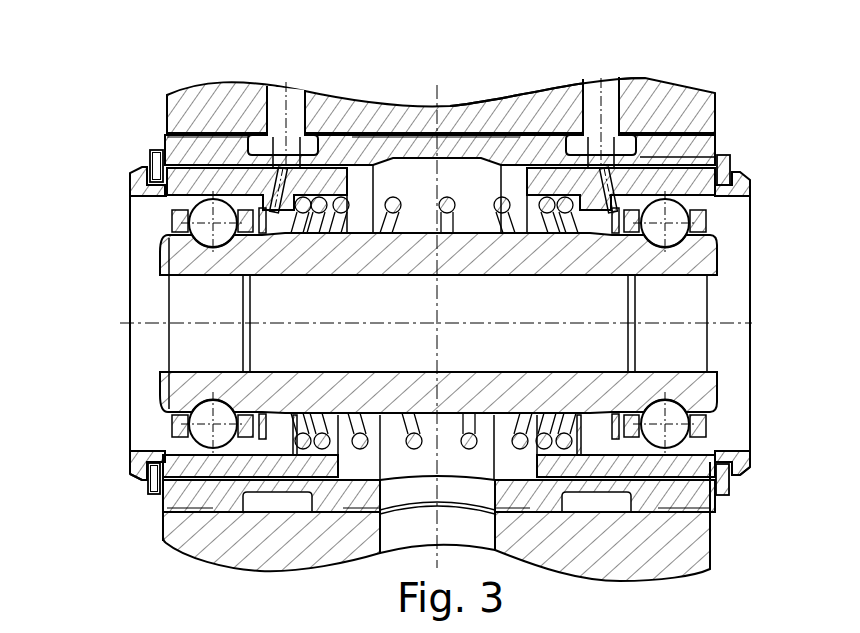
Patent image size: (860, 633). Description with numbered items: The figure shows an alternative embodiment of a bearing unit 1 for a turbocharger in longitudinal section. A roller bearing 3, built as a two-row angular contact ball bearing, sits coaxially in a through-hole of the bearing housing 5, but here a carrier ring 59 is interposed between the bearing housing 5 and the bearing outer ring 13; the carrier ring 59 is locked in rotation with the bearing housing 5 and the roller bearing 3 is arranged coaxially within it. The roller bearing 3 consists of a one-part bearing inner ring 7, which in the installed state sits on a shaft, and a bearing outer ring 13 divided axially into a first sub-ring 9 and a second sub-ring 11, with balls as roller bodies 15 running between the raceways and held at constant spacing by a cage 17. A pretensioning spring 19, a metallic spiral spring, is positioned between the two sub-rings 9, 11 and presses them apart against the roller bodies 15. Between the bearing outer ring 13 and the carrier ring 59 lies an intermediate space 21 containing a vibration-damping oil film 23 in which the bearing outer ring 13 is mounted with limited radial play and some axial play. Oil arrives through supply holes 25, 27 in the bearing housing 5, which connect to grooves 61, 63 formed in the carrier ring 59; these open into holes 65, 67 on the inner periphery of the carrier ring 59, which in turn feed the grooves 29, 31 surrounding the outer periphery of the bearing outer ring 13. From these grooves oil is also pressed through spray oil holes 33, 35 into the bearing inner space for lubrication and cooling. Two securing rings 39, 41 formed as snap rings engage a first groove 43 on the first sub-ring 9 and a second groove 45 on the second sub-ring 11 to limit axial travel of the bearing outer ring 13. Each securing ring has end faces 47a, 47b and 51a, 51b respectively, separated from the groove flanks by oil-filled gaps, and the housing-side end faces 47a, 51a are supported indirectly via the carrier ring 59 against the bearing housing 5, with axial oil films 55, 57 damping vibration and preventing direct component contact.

The bearing unit 1 is at (794, 33).
The roller bearing 3 is at (100, 391).
The bearing housing 5 is at (568, 550).
The bearing inner ring 7 is at (180, 394).
The first sub-ring 9 is at (210, 184).
The second sub-ring 11 is at (690, 190).
The bearing outer ring 13 is at (118, 467).
The roller bodies 15 is at (167, 248).
The cage 17 is at (185, 432).
The pretensioning spring 19 is at (452, 193).
The intermediate space 21 is at (480, 100).
The oil film 23 is at (638, 486).
The supply hole 25 is at (299, 107).
The supply hole 27 is at (586, 100).
The groove 29 is at (302, 173).
The groove 31 is at (540, 157).
The spray oil hole 33 is at (235, 140).
The spray oil hole 35 is at (683, 130).
The first securing ring 39 is at (155, 494).
The second securing ring 41 is at (730, 489).
The first groove 43 is at (147, 443).
The second groove 45 is at (733, 453).
The end face 47a is at (160, 494).
The end face 47b is at (140, 485).
The end face 51a is at (718, 495).
The end face 51b is at (735, 484).
The oil film 55 is at (157, 150).
The oil film 57 is at (725, 155).
The carrier ring 59 is at (688, 133).
The groove 61 is at (282, 152).
The groove 63 is at (618, 130).
The hole 65 is at (267, 187).
The hole 67 is at (604, 158).